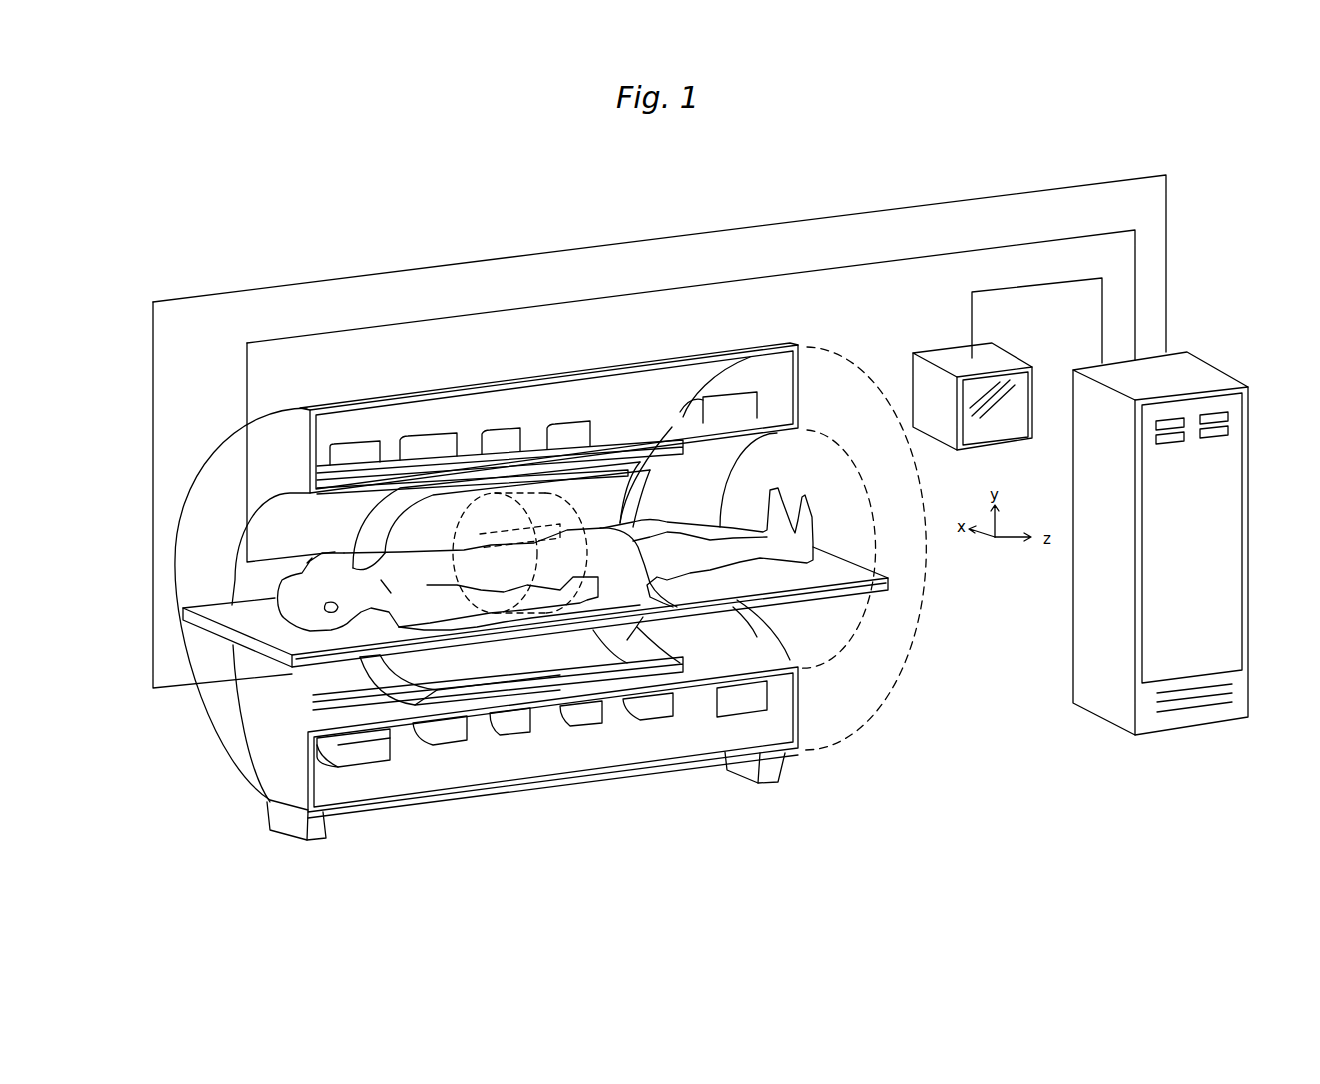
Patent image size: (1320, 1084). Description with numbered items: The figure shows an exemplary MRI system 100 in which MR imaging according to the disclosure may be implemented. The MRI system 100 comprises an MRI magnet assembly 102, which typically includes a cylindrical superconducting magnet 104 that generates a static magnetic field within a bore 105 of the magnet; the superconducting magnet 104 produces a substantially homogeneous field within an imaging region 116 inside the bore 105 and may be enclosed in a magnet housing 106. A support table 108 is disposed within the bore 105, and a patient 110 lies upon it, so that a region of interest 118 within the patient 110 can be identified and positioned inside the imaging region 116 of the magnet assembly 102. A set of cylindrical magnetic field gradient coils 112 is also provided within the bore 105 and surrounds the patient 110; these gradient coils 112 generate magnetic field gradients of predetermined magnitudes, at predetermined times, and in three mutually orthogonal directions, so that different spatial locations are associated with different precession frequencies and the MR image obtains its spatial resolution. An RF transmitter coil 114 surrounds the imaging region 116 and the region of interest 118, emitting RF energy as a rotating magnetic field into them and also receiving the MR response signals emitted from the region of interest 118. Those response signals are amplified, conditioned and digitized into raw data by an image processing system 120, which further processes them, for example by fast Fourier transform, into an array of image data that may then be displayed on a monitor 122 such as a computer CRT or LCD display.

The MRI system 100 is at (627, 820).
The MRI magnet assembly 102 is at (872, 728).
The superconducting magnet 104 is at (567, 427).
The bore 105 is at (272, 694).
The magnet housing 106 is at (647, 360).
The support table 108 is at (785, 603).
The patient 110 is at (390, 600).
The magnetic field gradient coils 112 is at (684, 666).
The RF transmitter coil 114 is at (380, 680).
The imaging region 116 is at (518, 515).
The region of interest 118 is at (487, 545).
The image processing system 120 is at (1093, 640).
The monitor 122 is at (1032, 372).